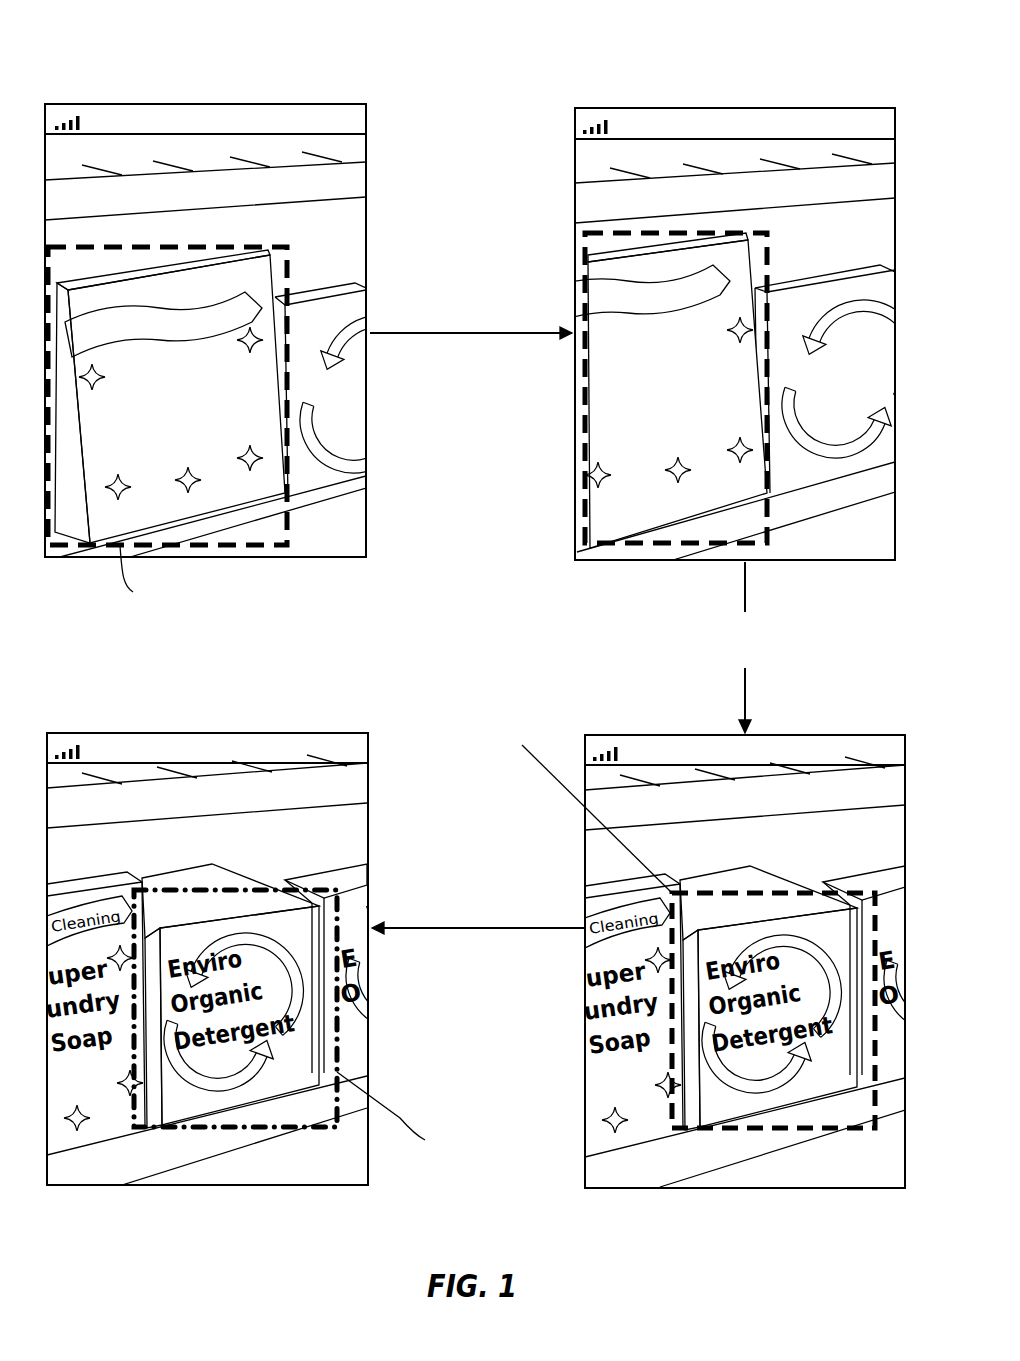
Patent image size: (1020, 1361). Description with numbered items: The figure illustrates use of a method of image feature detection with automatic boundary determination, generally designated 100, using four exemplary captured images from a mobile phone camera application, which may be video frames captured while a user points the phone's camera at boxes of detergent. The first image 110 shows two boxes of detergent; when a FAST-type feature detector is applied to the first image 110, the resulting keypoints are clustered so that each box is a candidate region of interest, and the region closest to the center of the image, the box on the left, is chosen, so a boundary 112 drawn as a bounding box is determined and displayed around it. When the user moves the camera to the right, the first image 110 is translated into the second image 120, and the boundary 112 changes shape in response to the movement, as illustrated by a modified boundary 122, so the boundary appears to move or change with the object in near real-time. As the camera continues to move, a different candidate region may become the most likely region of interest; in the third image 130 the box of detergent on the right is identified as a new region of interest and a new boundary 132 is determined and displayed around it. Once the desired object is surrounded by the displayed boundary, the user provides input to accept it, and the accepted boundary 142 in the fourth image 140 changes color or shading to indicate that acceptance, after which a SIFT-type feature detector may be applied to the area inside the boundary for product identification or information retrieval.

The method of image feature detection 100 is at (522, 60).
The first image 110 is at (232, 104).
The boundary 112 is at (240, 548).
The second image 120 is at (745, 108).
The modified boundary 122 is at (634, 546).
The third image 130 is at (832, 735).
The new boundary 132 is at (672, 1050).
The fourth image 140 is at (298, 733).
The accepted boundary 142 is at (337, 1068).